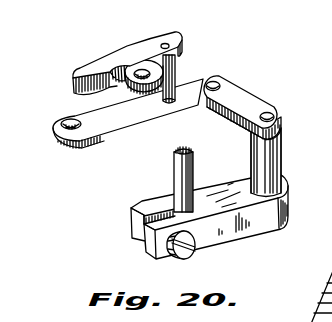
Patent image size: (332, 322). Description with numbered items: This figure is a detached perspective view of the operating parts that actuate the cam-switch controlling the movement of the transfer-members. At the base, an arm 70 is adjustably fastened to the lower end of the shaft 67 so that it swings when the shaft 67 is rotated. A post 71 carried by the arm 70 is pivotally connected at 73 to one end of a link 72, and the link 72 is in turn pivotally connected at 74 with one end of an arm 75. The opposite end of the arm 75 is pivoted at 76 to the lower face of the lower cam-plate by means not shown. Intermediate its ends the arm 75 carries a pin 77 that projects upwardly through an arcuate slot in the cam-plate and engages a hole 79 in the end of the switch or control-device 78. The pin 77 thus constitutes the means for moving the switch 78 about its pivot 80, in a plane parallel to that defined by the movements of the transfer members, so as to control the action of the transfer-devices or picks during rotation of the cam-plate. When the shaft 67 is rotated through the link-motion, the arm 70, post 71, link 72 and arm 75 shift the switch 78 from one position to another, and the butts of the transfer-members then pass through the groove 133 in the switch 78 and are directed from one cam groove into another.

The arm 70 is at (231, 232).
The shaft 67 is at (181, 167).
The post 71 is at (282, 160).
The link 72 is at (246, 100).
The pivot 73 is at (281, 114).
The pivot 74 is at (218, 84).
The arm 75 is at (140, 117).
The pivot 76 is at (74, 135).
The pin 77 is at (179, 84).
The switch or control-device 78 is at (129, 48).
The hole 79 is at (177, 43).
The pivot 80 is at (128, 81).
The groove 133 is at (114, 58).